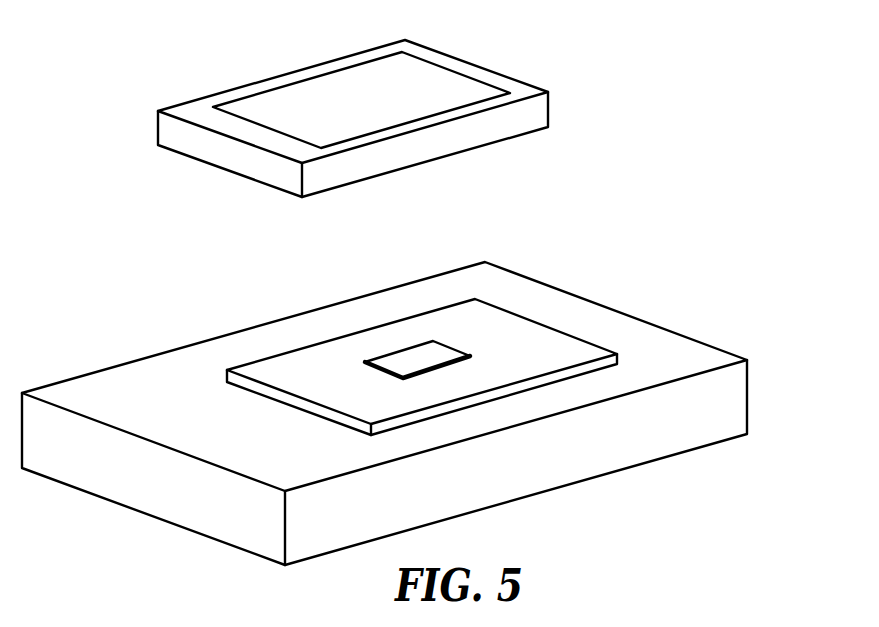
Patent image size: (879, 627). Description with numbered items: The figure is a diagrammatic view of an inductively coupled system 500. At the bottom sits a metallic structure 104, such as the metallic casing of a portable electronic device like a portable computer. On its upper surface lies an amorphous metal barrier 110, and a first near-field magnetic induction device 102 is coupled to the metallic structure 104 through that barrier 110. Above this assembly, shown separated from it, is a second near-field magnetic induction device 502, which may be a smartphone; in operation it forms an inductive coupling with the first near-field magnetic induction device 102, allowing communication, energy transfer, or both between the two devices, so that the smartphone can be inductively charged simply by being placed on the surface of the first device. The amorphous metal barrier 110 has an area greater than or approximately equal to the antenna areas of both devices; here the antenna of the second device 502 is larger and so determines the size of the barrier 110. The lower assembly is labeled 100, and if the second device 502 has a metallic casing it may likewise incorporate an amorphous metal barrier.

The inductively coupled system 500 is at (729, 31).
The second near-field magnetic induction device 502 is at (190, 102).
The semiconductor package 100 is at (612, 523).
The metallic structure 104 is at (128, 360).
The amorphous metal barrier 110 is at (275, 356).
The first near-field magnetic induction device 102 is at (398, 352).